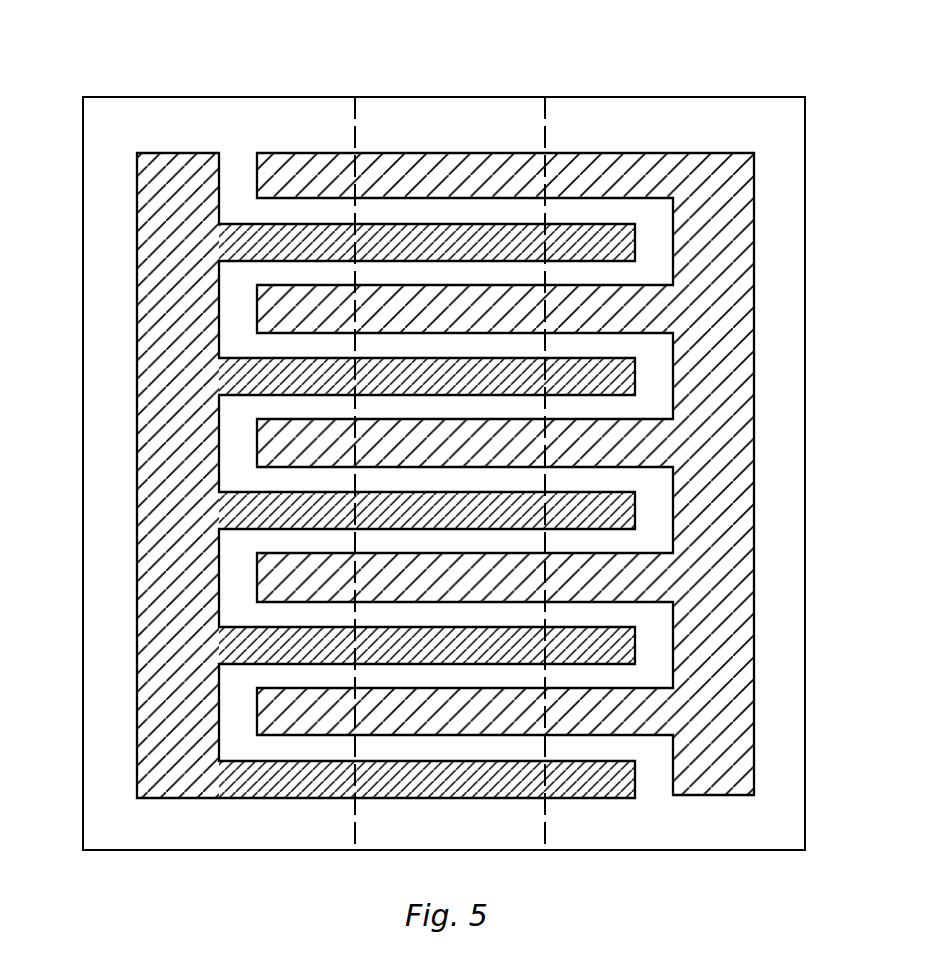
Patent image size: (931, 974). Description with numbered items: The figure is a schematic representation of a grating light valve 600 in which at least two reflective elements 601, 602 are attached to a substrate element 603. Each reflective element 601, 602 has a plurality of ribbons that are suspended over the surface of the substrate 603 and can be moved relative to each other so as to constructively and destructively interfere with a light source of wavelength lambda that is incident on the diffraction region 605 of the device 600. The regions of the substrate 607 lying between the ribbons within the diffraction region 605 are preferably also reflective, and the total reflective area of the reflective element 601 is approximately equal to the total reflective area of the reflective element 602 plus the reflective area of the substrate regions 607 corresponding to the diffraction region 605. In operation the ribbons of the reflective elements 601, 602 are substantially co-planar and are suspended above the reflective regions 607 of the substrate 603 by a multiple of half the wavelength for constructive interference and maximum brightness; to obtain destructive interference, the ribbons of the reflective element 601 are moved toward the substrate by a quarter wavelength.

The grating light valve 600 is at (420, 453).
The reflective element 601 is at (707, 745).
The reflective element 602 is at (140, 745).
The substrate element 603 is at (107, 584).
The diffraction region 605 is at (507, 130).
The substrate regions between the ribbons 607 is at (385, 403).